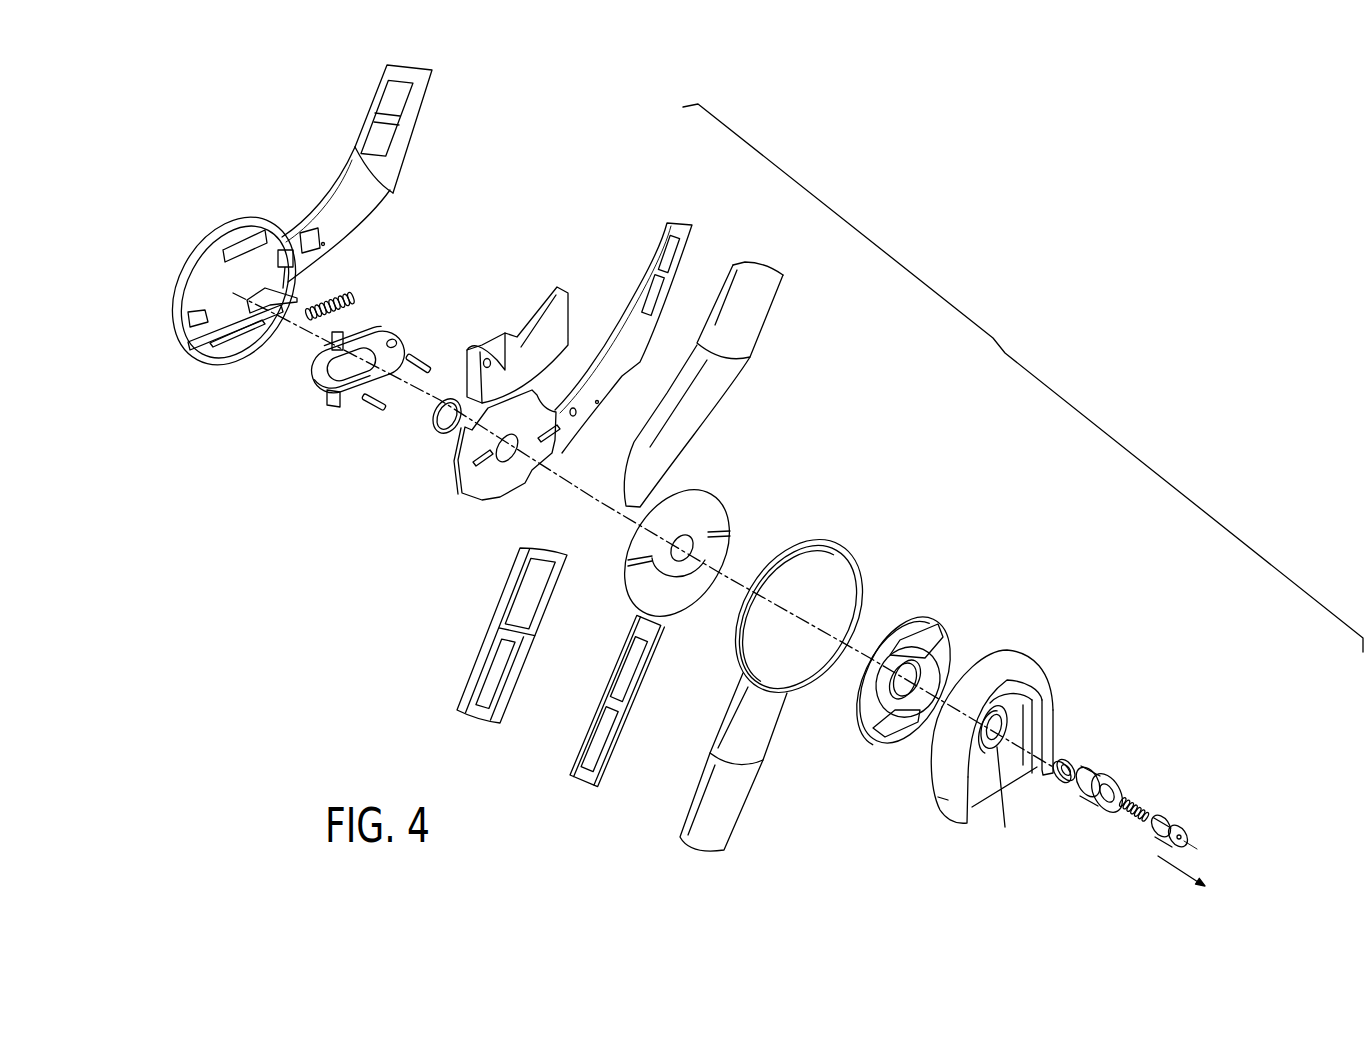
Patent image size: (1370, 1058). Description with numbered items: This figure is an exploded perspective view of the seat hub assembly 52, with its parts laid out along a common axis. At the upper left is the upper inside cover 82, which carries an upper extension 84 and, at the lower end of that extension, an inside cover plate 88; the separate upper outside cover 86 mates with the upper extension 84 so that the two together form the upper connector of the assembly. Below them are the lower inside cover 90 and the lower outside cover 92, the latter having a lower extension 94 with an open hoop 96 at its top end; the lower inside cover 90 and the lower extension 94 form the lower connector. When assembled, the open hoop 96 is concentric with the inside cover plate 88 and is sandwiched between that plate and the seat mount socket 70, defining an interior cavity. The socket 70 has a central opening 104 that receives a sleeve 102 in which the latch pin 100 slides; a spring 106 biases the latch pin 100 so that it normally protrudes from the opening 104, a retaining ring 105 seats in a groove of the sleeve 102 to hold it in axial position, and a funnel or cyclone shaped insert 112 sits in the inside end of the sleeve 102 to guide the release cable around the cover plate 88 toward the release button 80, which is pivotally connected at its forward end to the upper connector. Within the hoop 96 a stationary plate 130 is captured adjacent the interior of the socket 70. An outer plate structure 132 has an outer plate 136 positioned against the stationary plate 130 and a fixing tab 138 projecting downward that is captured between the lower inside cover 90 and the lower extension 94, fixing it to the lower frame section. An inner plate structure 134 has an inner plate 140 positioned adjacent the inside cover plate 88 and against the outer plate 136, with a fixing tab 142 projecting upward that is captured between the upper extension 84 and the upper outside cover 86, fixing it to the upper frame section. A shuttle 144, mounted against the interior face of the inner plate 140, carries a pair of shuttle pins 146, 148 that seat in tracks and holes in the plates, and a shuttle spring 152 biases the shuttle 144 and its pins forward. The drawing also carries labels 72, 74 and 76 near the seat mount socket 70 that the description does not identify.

The seat hub assembly 52 is at (1003, 340).
The seat mount socket 70 is at (1027, 750).
The bracket right leg 72 is at (1017, 773).
The bracket left leg 74 is at (948, 806).
The bracket arch 76 is at (1007, 680).
The release button 80 is at (573, 300).
The upper inside cover 82 is at (331, 171).
The upper extension 84 is at (364, 123).
The upper outside cover 86 is at (737, 397).
The inside cover plate 88 is at (173, 307).
The lower inside cover 90 is at (480, 657).
The lower outside cover 92 is at (706, 784).
The lower extension 94 is at (737, 823).
The open hoop 96 is at (820, 540).
The latch pin 100 is at (1175, 818).
The sleeve 102 is at (1102, 775).
The central opening 104 is at (994, 749).
The retaining ring 105 is at (433, 427).
The spring 106 is at (1142, 803).
The funnel or cyclone shaped insert 112 is at (1072, 762).
The stationary plate 130 is at (918, 613).
The outer plate structure 132 is at (643, 668).
The inner plate structure 134 is at (655, 306).
The outer plate 136 is at (700, 490).
The fixing tab 138 is at (580, 785).
The inner plate 140 is at (455, 470).
The fixing tab 142 is at (683, 223).
The shuttle 144 is at (313, 373).
The shuttle pin 146 is at (367, 407).
The shuttle pin 148 is at (417, 353).
The shuttle spring 152 is at (350, 293).